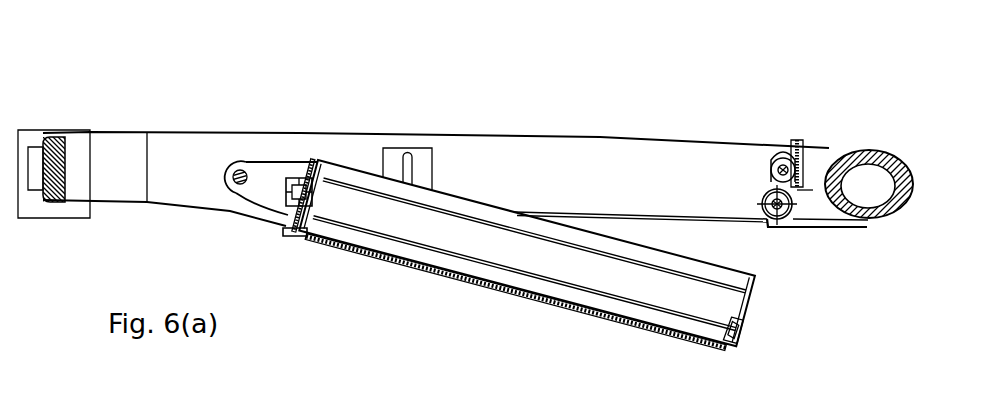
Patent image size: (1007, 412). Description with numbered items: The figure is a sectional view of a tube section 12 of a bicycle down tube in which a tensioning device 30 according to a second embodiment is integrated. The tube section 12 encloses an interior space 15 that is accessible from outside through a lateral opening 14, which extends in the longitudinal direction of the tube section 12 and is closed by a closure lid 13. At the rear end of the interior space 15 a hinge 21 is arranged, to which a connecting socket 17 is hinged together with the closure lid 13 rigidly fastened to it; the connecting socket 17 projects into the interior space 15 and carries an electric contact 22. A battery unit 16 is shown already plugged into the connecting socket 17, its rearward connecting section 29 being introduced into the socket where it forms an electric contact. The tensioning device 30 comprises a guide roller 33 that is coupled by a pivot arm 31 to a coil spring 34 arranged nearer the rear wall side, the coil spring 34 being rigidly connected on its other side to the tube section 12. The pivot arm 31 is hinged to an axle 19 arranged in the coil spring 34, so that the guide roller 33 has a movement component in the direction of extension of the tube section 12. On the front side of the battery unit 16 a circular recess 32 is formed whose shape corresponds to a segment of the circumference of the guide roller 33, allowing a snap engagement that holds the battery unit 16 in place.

The tube section 12 is at (377, 97).
The closure lid 13 is at (463, 283).
The lateral opening 14 is at (732, 229).
The interior space 15 is at (628, 167).
The battery unit 16 is at (612, 318).
The connecting socket 17 is at (288, 233).
The axle 19 is at (806, 150).
The hinge 21 is at (243, 171).
The electric contact 22 is at (293, 178).
The rearward connecting section 29 is at (298, 233).
The tensioning device 30 is at (734, 162).
The pivot arm 31 is at (775, 186).
The circular recess 32 is at (740, 341).
The guide roller 33 is at (792, 213).
The coil spring 34 is at (792, 147).